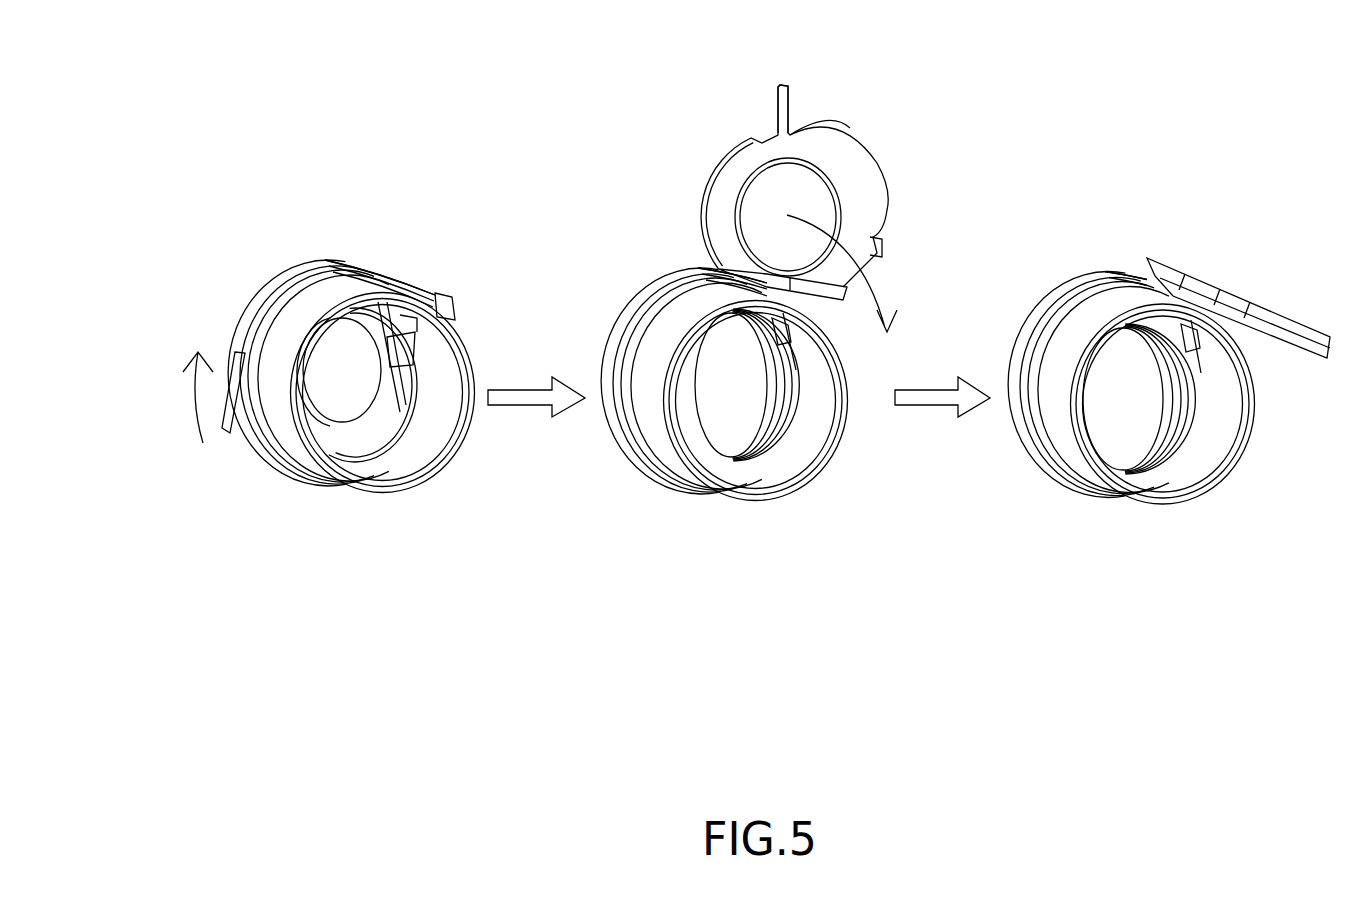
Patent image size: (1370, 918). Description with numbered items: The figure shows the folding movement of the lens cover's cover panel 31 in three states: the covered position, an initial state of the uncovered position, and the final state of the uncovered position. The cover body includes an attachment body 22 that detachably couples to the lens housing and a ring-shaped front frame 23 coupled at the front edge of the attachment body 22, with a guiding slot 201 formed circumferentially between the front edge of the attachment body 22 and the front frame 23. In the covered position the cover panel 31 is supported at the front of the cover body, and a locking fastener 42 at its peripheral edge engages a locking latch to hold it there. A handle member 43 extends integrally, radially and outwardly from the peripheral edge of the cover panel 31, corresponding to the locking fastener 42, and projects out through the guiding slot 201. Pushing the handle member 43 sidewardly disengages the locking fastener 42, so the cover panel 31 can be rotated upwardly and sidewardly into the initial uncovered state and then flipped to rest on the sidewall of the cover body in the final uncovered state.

The guiding slot 201 is at (305, 263).
The attachment body 22 is at (298, 455).
The front frame 23 is at (268, 285).
The cover panel 31 is at (332, 267).
The locking fastener 42 is at (768, 127).
The handle member 43 is at (233, 427).